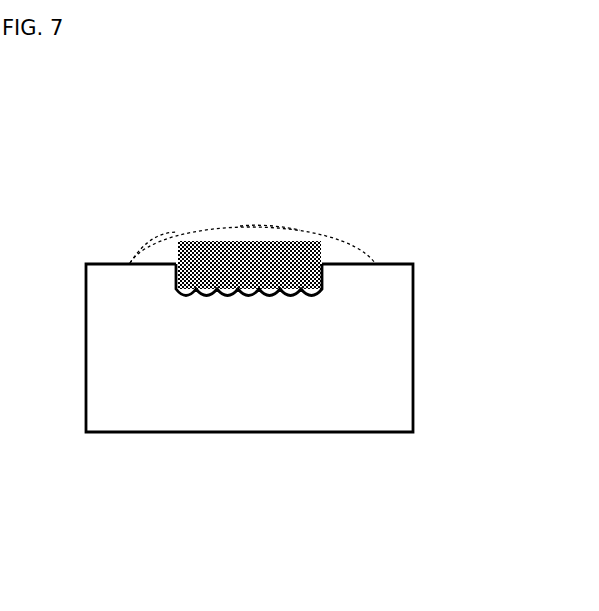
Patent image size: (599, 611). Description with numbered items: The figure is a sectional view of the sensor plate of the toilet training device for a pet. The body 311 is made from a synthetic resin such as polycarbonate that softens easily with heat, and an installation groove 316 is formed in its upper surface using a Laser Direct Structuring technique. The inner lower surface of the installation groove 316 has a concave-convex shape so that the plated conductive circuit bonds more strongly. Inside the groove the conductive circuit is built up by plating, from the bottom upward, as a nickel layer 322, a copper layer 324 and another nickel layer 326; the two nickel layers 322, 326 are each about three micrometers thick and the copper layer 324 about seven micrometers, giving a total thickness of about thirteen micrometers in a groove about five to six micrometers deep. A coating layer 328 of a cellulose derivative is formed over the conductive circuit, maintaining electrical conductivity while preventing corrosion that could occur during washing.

The body 311 is at (168, 398).
The installation groove 316 is at (328, 272).
The nickel layer 322 is at (177, 233).
The copper layer 324 is at (232, 250).
The nickel layer 326 is at (265, 248).
The coating layer 328 is at (347, 238).